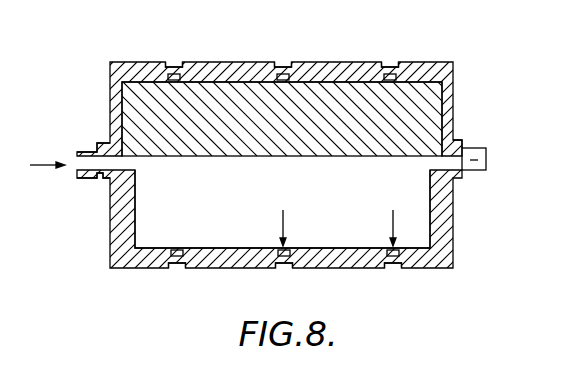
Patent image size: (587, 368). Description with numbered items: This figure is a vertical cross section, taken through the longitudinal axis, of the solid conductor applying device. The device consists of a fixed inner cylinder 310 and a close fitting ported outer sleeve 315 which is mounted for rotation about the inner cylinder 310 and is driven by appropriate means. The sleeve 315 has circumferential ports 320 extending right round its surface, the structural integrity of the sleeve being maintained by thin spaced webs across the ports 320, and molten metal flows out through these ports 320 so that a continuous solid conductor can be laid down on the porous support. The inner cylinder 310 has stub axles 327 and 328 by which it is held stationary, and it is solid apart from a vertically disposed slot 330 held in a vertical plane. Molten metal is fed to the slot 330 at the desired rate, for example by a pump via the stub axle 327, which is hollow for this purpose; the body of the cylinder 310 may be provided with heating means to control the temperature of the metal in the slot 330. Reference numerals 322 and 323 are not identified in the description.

The inner cylinder 310 is at (355, 95).
The ported outer sleeve 315 is at (456, 128).
The circumferential ports 320 is at (174, 62).
The inlet flange 322 is at (105, 143).
The outlet shoulder 323 is at (464, 145).
The stub axle 327 is at (100, 178).
The stub axle 328 is at (480, 172).
The slot 330 is at (365, 228).